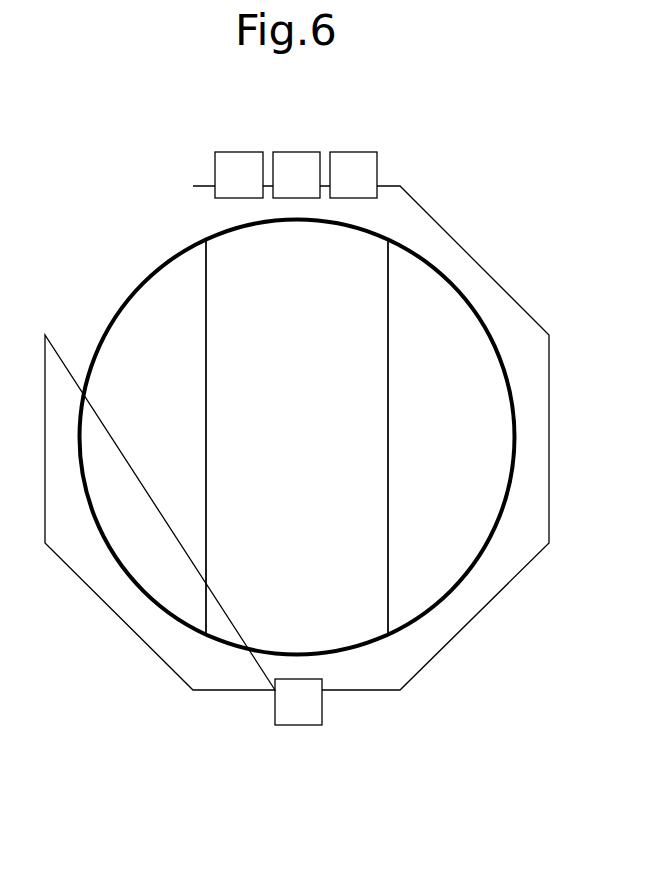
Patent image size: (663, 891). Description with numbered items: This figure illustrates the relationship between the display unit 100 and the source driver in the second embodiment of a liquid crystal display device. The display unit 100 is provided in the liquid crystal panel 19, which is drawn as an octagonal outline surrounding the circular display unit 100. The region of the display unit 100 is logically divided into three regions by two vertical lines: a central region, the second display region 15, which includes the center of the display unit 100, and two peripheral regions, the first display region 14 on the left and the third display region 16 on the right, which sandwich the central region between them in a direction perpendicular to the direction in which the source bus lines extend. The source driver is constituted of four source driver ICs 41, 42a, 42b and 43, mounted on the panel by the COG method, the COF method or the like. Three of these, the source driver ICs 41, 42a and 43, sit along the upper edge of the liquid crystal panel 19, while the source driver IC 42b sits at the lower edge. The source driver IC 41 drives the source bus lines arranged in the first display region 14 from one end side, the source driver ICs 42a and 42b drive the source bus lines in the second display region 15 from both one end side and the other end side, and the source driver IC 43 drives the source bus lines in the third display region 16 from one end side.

The first display region 14 is at (145, 517).
The second display region 15 is at (246, 586).
The third display region 16 is at (450, 517).
The liquid crystal panel 19 is at (466, 251).
The display unit 100 is at (312, 657).
The source driver IC 41 is at (242, 152).
The source driver IC 42a is at (297, 152).
The source driver IC 42b is at (299, 727).
The source driver IC 43 is at (357, 152).